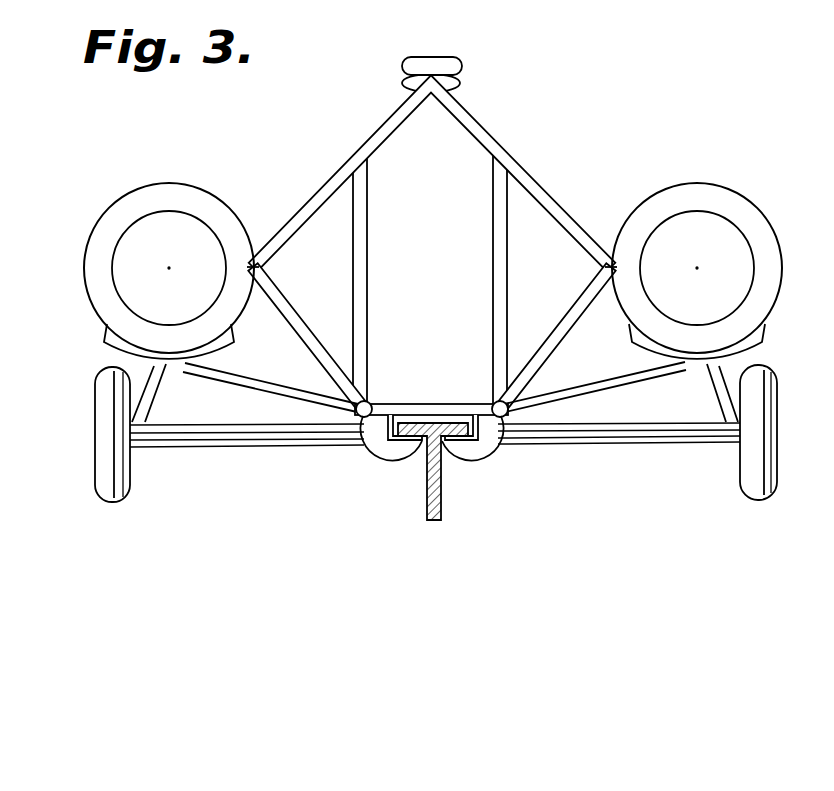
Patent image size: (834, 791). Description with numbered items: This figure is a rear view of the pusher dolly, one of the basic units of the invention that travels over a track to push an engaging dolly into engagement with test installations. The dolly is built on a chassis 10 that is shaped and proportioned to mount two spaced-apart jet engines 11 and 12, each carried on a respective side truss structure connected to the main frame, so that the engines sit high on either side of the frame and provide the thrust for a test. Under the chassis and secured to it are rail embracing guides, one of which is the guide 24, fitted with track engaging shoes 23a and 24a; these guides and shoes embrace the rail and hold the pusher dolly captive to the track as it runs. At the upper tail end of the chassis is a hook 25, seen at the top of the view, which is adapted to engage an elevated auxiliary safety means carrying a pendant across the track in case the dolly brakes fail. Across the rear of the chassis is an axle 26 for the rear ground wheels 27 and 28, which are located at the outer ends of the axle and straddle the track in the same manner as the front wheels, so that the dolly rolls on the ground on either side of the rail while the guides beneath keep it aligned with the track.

The chassis 10 is at (366, 404).
The jet engine 11 is at (93, 285).
The jet engine 12 is at (783, 291).
The track engaging shoe 23a is at (390, 416).
The rail embracing guide 24 is at (499, 447).
The track engaging shoe 24a is at (421, 442).
The hook 25 is at (440, 67).
The axle 26 is at (620, 423).
The rear ground wheel 27 is at (132, 478).
The rear ground wheel 28 is at (748, 450).